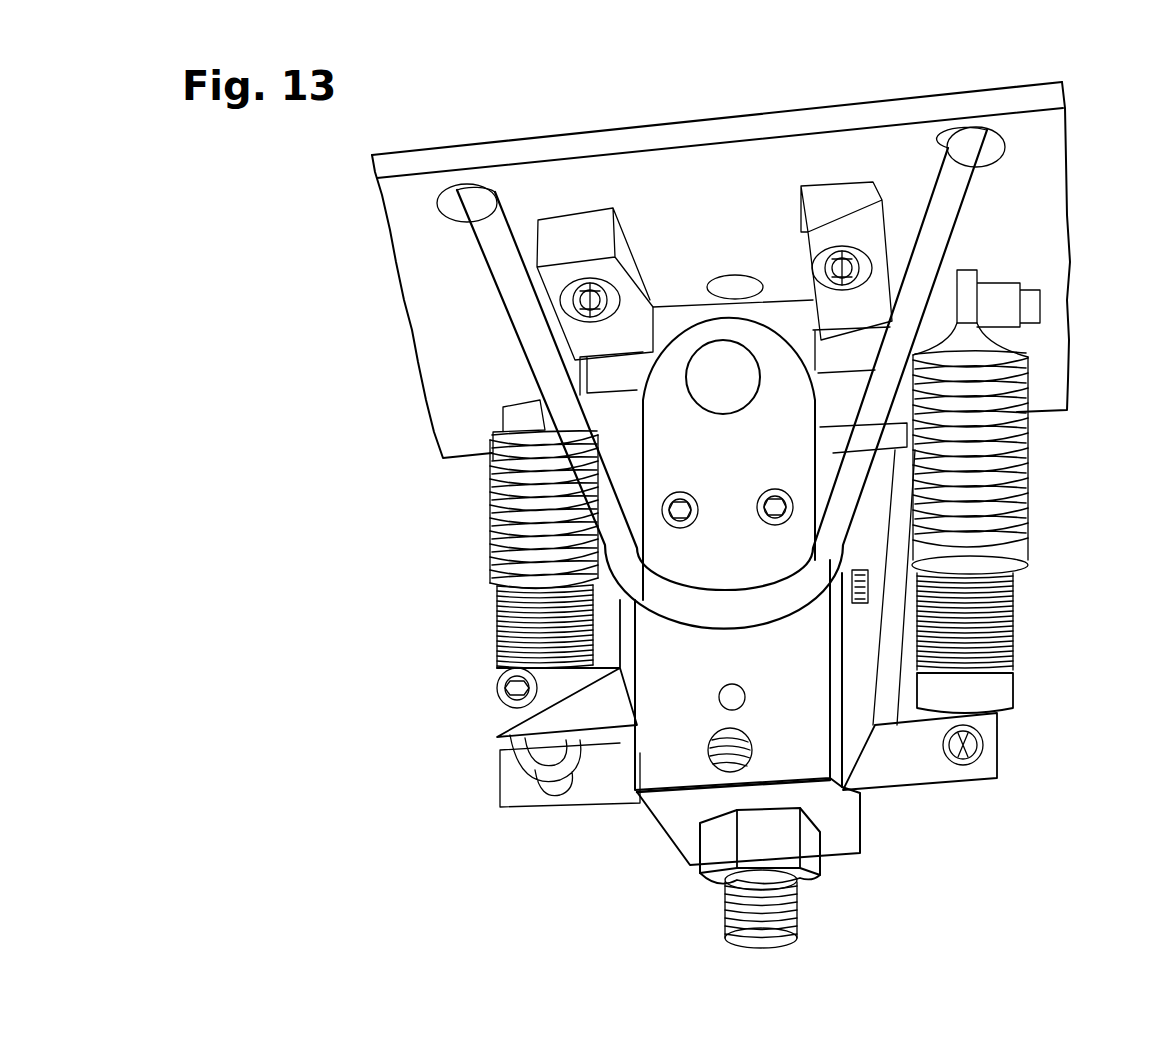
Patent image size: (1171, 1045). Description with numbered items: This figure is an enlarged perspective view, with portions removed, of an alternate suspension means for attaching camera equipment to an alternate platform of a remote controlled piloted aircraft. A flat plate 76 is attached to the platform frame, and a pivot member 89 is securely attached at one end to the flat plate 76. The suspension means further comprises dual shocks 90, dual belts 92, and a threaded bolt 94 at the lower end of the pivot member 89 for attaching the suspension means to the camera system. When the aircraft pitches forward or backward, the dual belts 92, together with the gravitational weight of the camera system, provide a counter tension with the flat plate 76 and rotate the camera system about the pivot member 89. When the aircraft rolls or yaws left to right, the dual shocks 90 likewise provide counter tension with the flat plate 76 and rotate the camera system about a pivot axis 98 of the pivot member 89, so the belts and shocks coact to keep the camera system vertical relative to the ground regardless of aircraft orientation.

The flat plate 76 is at (1043, 155).
The pivot member 89 is at (686, 335).
The dual shocks 90 is at (490, 593).
The dual belts 92 is at (945, 232).
The threaded bolt 94 is at (813, 897).
The pivot axis 98 is at (733, 370).